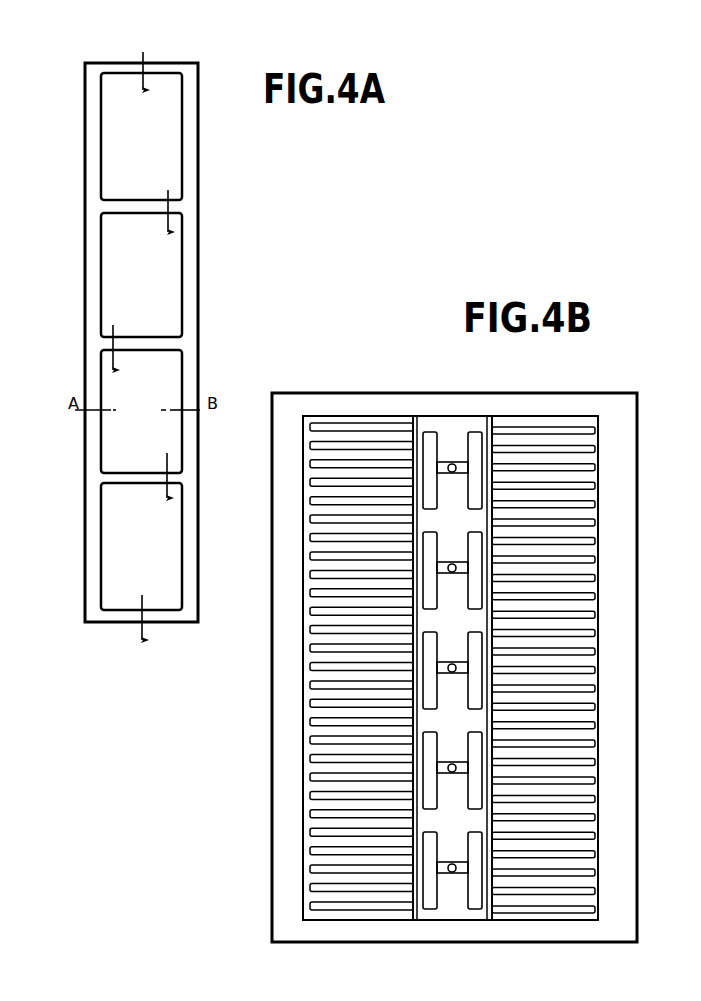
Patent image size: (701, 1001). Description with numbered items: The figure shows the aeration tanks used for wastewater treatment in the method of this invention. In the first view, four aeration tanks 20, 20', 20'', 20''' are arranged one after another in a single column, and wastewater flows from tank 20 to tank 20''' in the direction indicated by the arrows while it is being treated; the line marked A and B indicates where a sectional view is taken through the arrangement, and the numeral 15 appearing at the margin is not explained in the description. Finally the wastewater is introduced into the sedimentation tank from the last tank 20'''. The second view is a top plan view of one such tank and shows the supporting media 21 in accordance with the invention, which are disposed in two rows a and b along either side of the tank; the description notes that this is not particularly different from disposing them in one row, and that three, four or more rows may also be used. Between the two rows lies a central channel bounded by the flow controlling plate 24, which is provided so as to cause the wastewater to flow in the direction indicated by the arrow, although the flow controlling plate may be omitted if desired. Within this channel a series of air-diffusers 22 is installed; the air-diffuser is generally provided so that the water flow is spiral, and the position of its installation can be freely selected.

In FIG. 4A, the aeration tank 20 is at (168, 136).
In FIG. 4A, the aeration tank 20' is at (170, 275).
In FIG. 4A, the aeration tank 20'' is at (172, 411).
In FIG. 4A, the aeration tank 20''' is at (172, 546).
In FIG. 4A, the unit 15 is at (13, 499).
In FIG. 4B, the supporting media 21 is at (595, 487).
In FIG. 4B, the air-diffuser 22 is at (430, 432).
In FIG. 4B, the flow controlling plate 24 is at (483, 918).
In FIG. 4B, the row of supporting media a is at (377, 914).
In FIG. 4B, the row of supporting media b is at (552, 914).